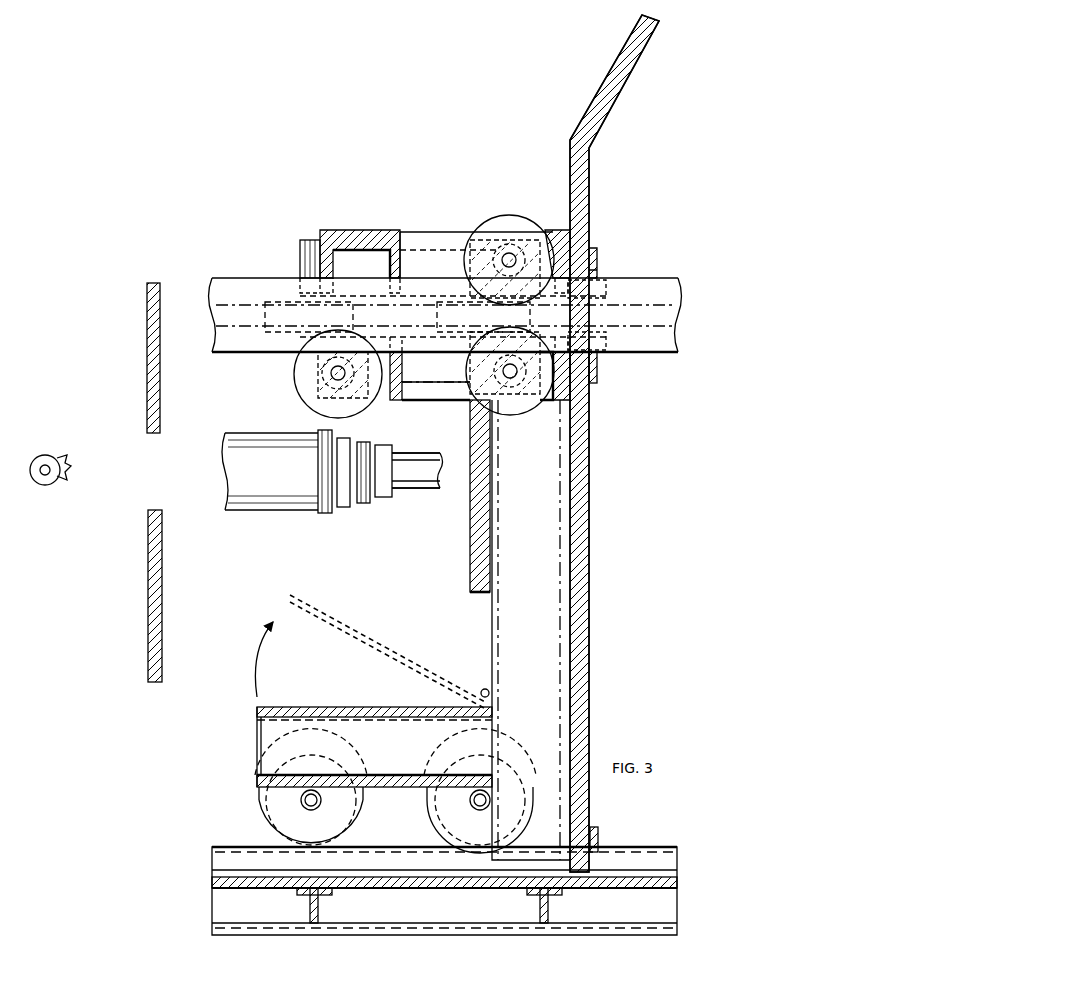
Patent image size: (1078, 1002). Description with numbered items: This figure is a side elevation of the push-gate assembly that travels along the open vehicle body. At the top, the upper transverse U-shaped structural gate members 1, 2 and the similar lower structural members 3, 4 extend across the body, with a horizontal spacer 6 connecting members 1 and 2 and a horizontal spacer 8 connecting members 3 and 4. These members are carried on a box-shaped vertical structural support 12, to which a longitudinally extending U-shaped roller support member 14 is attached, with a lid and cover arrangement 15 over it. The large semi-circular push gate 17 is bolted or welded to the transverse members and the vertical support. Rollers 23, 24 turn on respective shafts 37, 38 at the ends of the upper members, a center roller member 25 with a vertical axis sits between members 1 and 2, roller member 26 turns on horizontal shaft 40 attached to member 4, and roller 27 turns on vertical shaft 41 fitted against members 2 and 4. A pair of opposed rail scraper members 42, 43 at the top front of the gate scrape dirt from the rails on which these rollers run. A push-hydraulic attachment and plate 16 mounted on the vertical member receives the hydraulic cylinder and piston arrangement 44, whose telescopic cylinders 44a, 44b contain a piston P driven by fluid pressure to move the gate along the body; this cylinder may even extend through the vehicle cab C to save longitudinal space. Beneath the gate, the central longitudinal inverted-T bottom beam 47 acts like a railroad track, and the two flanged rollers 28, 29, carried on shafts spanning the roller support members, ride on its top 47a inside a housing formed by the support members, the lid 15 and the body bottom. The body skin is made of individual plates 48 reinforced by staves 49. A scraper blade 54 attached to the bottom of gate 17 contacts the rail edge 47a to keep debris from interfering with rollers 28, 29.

The upper transverse U-shaped structural gate member 1 is at (560, 245).
The upper transverse U-shaped structural gate member 2 is at (345, 232).
The lower structural member 3 is at (560, 400).
The lower structural member 4 is at (393, 397).
The horizontal spacer 6 is at (433, 240).
The horizontal spacer 8 is at (440, 386).
The vertical structural support 12 is at (522, 600).
The U-shaped roller support member 14 is at (268, 740).
The lid and cover arrangement 15 is at (368, 705).
The push-hydraulic attachment and plate 16 is at (483, 545).
The push gate 17 is at (582, 525).
The roller 23 is at (507, 223).
The roller 24 is at (548, 368).
The center roller member 25 is at (456, 316).
The roller member 26 is at (317, 392).
The roller 27 is at (280, 316).
The roller 28 is at (455, 813).
The roller 29 is at (355, 815).
The shaft 37 is at (502, 252).
The shaft 38 is at (510, 373).
The horizontal shaft 40 is at (331, 373).
The vertical shaft 41 is at (300, 250).
The rail scraper member 42 is at (598, 262).
The rail scraper member 43 is at (598, 365).
The hydraulic cylinder and piston arrangement 44 is at (62, 472).
The telescopic cylinder 44a is at (283, 476).
The telescopic cylinder 44b is at (362, 504).
The bottom beam 47 is at (235, 907).
The top of the track 47a is at (636, 855).
The plate 48 is at (213, 883).
The stave 49 is at (540, 918).
The scraper blade 54 is at (598, 830).
The vehicle cab C is at (146, 310).
The piston P is at (417, 479).